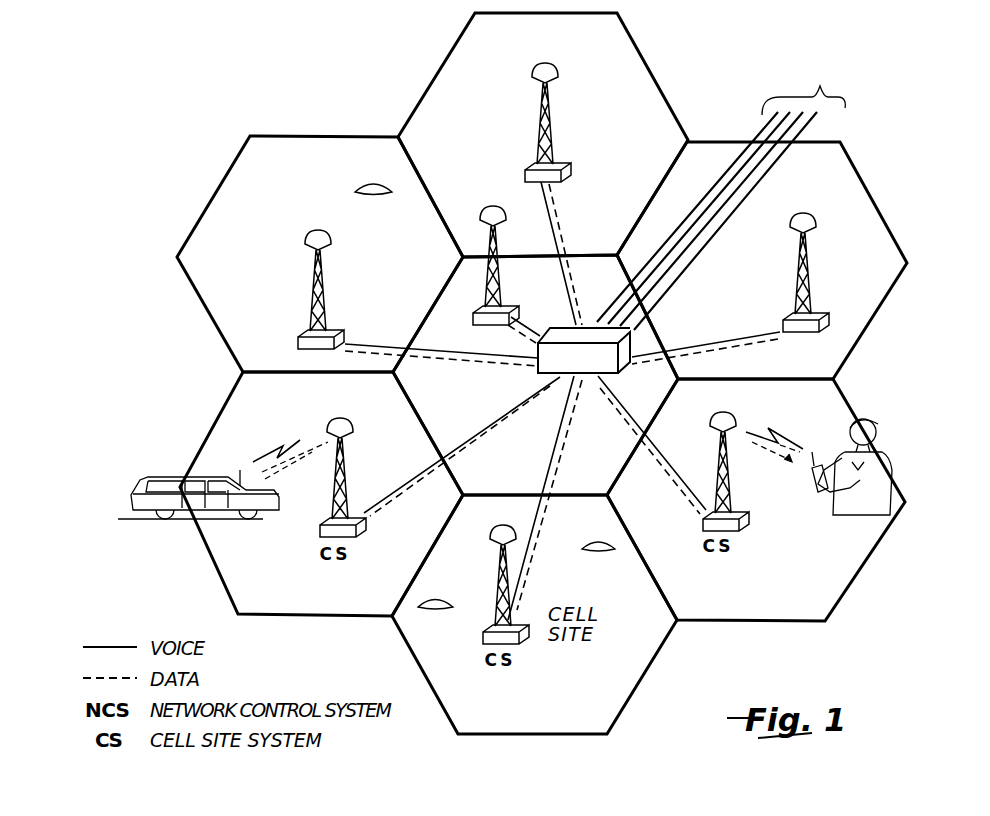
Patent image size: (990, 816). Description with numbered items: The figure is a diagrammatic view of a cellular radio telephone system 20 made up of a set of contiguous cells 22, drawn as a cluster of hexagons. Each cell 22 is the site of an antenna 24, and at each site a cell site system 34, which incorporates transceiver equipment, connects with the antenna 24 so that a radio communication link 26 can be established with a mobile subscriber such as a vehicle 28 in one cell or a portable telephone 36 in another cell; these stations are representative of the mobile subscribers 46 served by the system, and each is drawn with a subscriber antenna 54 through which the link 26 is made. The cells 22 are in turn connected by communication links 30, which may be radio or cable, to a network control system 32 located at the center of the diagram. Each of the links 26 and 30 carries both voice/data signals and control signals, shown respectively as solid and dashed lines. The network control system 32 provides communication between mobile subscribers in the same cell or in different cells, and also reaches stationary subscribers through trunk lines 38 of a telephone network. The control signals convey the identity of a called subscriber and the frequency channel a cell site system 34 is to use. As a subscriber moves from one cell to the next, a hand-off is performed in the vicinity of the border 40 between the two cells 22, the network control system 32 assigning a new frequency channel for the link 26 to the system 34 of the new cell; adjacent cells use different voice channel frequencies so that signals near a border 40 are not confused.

The cellular radio telephone system 20 is at (240, 100).
The cell 22 is at (418, 103).
The antenna 24 is at (550, 134).
The radio communication link 26 is at (282, 447).
The vehicle 28 is at (153, 478).
The communication link 30 is at (735, 338).
The network control system 32 is at (536, 371).
The cell site system 34 is at (318, 530).
The portable telephone 36 is at (818, 488).
The trunk line 38 is at (812, 123).
The border 40 is at (431, 548).
The mobile subscribers 46 is at (373, 184).
The antenna 54 is at (240, 470).